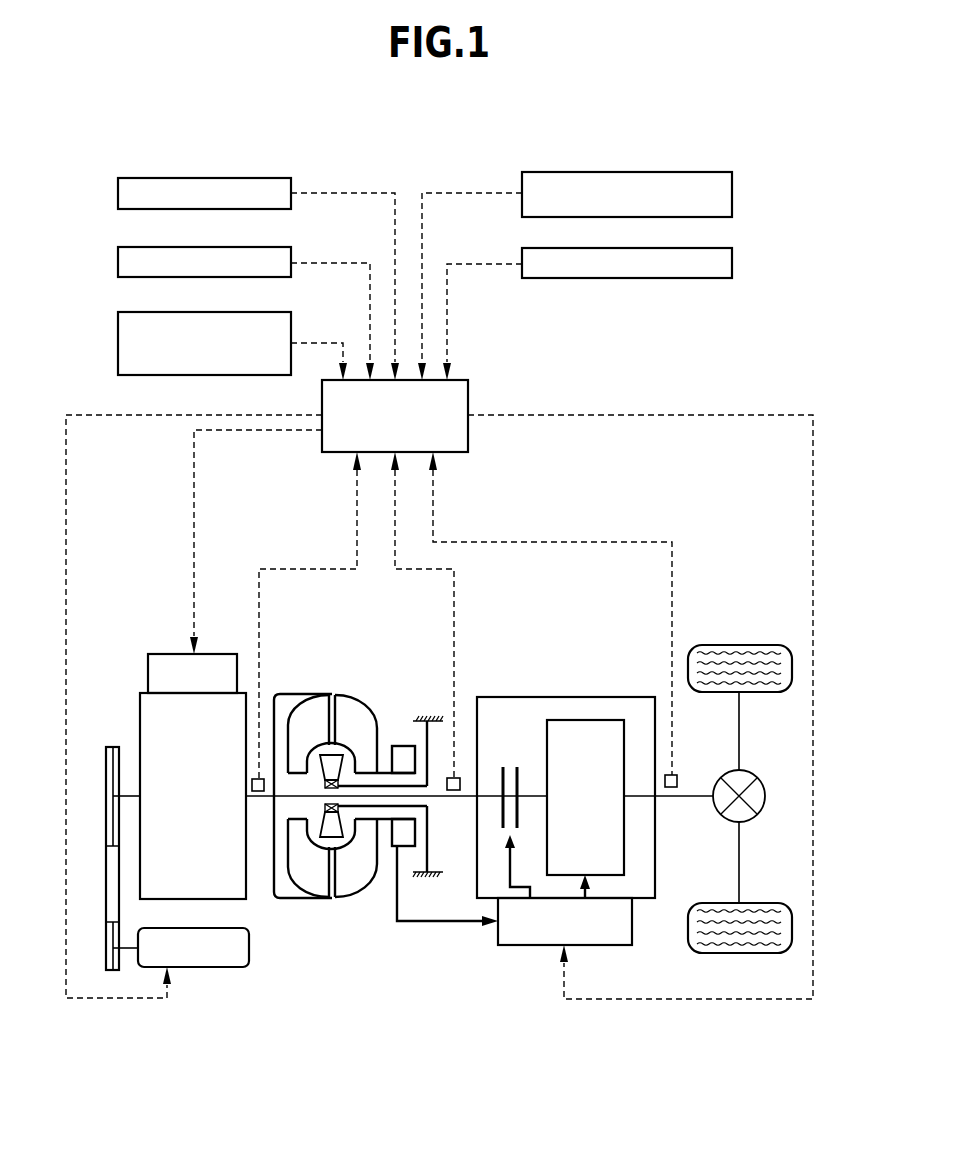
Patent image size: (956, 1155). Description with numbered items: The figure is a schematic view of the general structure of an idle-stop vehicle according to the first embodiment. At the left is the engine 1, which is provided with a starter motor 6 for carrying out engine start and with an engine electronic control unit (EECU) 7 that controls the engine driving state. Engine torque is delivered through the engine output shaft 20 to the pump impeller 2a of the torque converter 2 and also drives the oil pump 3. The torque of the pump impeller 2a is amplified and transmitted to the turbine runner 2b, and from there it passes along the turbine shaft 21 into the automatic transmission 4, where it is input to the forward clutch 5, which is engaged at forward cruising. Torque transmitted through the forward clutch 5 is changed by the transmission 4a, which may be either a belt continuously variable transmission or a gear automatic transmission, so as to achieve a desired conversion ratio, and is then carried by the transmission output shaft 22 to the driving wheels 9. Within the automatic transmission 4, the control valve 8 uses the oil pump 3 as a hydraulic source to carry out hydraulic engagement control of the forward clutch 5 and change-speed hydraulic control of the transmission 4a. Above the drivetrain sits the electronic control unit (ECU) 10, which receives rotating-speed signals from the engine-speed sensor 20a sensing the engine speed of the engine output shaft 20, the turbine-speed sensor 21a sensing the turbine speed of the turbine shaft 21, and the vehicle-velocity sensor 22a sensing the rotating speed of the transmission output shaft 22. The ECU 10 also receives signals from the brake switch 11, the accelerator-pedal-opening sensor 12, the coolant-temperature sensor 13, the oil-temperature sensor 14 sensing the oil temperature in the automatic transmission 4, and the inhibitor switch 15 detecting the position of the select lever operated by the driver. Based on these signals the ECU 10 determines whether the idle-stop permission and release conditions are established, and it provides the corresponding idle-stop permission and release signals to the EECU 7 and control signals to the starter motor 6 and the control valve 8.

The engine 1 is at (140, 722).
The torque converter 2 is at (339, 852).
The pump impeller 2a is at (355, 890).
The turbine runner 2b is at (304, 900).
The oil pump 3 is at (398, 735).
The automatic transmission 4 is at (566, 761).
The transmission 4a is at (595, 720).
The forward clutch 5 is at (512, 765).
The starter motor 6 is at (202, 968).
The engine electronic control unit (EECU) 7 is at (222, 653).
The control valve 8 is at (525, 947).
The driving wheels 9 is at (745, 645).
The electronic control unit (ECU) 10 is at (470, 395).
The brake switch 11 is at (244, 178).
The accelerator-pedal-opening (APO) sensor 12 is at (244, 247).
The coolant-temperature sensor 13 is at (244, 312).
The oil-temperature sensor 14 is at (686, 172).
The inhibitor switch 15 is at (686, 248).
The engine output shaft 20 is at (260, 792).
The engine-speed sensor 20a is at (267, 700).
The turbine shaft 21 is at (452, 792).
The turbine-speed sensor 21a is at (460, 725).
The transmission output shaft 22 is at (690, 797).
The vehicle-velocity sensor 22a is at (674, 775).